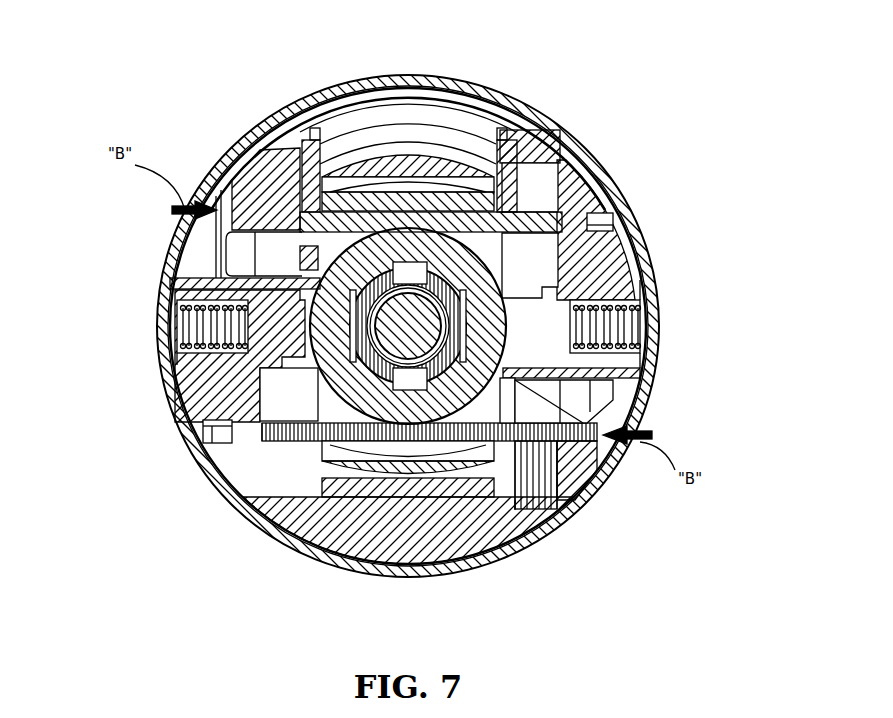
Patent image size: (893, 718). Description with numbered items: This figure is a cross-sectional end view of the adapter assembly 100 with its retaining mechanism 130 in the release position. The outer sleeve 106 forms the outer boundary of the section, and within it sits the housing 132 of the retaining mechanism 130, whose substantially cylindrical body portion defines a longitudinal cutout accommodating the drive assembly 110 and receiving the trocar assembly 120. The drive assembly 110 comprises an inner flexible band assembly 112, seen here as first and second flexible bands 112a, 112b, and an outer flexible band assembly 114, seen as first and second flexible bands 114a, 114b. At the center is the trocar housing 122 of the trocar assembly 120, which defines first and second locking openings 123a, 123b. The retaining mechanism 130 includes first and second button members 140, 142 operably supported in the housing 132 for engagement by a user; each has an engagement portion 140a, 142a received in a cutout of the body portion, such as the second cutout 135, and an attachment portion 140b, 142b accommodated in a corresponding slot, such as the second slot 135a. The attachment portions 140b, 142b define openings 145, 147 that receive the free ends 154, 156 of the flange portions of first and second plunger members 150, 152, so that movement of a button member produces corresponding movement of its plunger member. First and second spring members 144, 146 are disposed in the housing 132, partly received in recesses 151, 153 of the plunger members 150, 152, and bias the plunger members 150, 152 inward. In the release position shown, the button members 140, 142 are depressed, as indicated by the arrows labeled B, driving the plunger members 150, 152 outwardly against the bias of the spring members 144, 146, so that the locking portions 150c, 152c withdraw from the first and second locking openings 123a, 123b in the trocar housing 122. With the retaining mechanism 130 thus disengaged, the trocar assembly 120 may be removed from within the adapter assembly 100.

The adapter assembly 100 is at (662, 96).
The outer sleeve 106 is at (460, 566).
The drive assembly 110 is at (449, 126).
The inner flexible band assembly 112 is at (384, 176).
The first flexible band 112a is at (447, 167).
The second flexible band 112b is at (327, 456).
The outer flexible band assembly 114 is at (397, 150).
The first flexible band 114a is at (456, 124).
The second flexible band 114b is at (373, 490).
The trocar assembly 120 is at (333, 407).
The trocar housing 122 is at (447, 278).
The first locking opening 123a is at (565, 440).
The second locking opening 123b is at (492, 505).
The retaining mechanism 130 is at (259, 136).
The housing 132 is at (393, 542).
The second cutout 135 is at (617, 418).
The second slot 135a is at (524, 470).
The first button member 140 is at (207, 238).
The engagement portion 140a is at (262, 183).
The attachment portion 140b is at (513, 212).
The second button member 142 is at (505, 413).
The engagement portion 142a is at (580, 420).
The attachment portion 142b is at (300, 442).
The first spring member 144 is at (641, 327).
The opening 145 is at (600, 222).
The second spring member 146 is at (172, 323).
The opening 147 is at (237, 433).
The first plunger member 150 is at (645, 262).
The locking portion 150c is at (641, 292).
The recess 151 is at (641, 344).
The second plunger member 152 is at (172, 361).
The locking portion 152c is at (168, 366).
The recess 153 is at (188, 340).
The free end 154 is at (578, 222).
The free end 156 is at (262, 414).